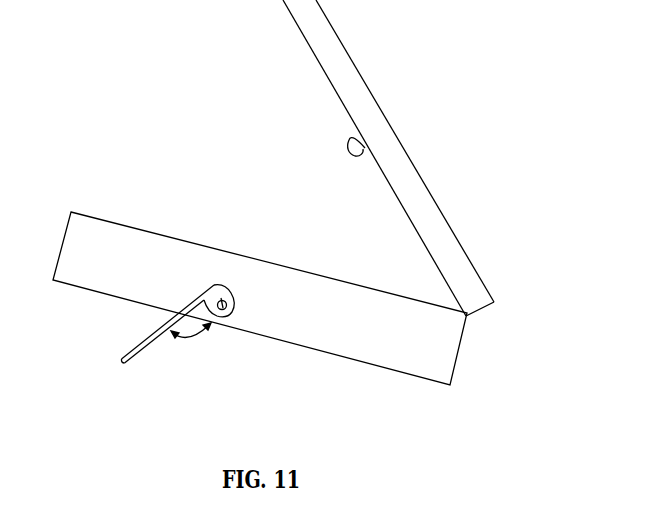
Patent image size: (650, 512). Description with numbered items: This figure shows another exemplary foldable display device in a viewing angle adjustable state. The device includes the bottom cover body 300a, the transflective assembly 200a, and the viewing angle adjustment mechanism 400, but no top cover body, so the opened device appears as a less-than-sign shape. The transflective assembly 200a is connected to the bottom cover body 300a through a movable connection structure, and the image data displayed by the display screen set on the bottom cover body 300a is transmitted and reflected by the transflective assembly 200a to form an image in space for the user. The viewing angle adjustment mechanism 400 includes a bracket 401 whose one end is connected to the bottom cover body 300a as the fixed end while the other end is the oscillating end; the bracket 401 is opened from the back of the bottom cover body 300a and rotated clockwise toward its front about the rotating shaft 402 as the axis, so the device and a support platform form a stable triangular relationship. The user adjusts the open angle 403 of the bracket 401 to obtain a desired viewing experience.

The transflective assembly 200a is at (401, 163).
The bottom cover body 300a is at (308, 333).
The viewing angle adjustment mechanism 400 is at (154, 319).
The bracket 401 is at (124, 359).
The rotating shaft 402 is at (225, 290).
The open angle 403 is at (188, 338).